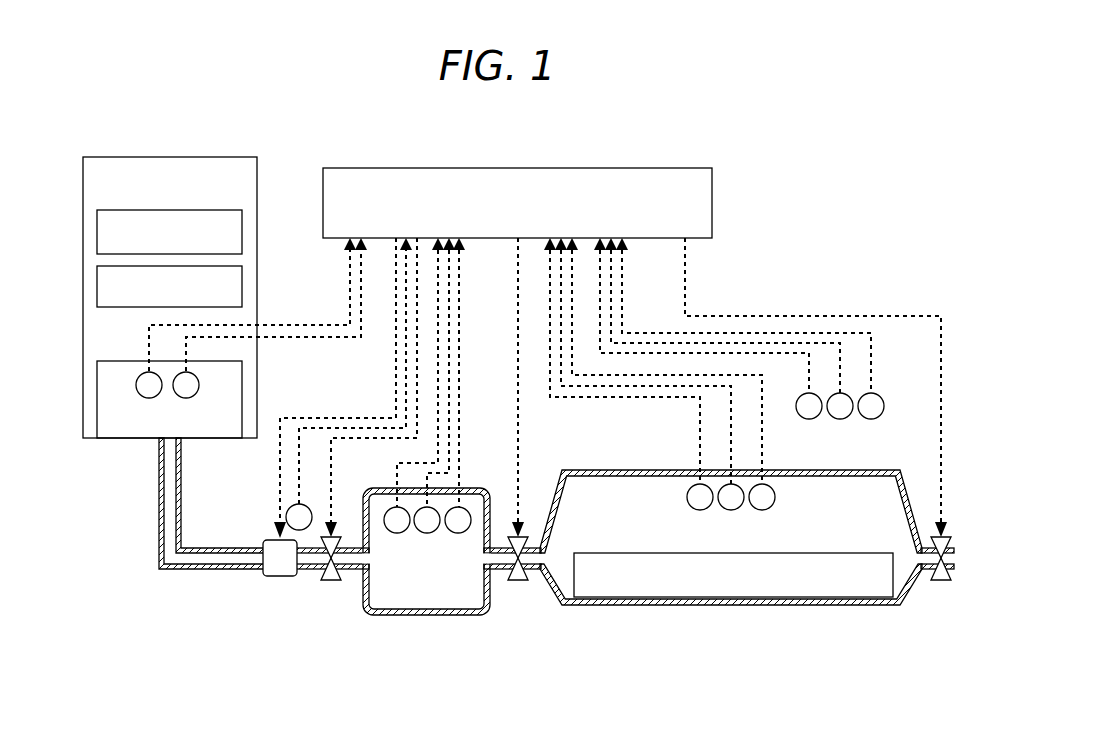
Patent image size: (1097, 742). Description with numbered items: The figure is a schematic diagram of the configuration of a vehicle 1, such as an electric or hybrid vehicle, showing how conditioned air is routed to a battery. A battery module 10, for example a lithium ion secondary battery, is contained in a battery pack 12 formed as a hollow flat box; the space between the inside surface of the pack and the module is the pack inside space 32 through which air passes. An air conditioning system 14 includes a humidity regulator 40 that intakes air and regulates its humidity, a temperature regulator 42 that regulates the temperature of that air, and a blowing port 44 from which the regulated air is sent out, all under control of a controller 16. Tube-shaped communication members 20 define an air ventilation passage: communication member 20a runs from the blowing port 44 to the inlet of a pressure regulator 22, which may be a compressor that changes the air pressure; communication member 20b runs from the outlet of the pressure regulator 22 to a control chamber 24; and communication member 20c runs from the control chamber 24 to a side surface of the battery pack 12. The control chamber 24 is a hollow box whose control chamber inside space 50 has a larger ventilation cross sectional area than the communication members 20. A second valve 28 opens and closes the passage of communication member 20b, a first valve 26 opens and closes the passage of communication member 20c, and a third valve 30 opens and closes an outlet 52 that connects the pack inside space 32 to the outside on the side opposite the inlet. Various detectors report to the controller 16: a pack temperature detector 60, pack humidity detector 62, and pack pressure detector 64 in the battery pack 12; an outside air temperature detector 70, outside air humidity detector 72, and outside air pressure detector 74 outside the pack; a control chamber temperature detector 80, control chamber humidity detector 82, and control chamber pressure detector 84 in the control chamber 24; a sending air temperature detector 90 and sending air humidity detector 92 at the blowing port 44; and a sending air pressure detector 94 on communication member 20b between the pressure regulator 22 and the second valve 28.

The vehicle 1 is at (793, 160).
The battery module 10 is at (836, 553).
The battery pack 12 is at (722, 605).
The air conditioning system 14 is at (171, 157).
The controller 16 is at (542, 168).
The communication members 20 is at (346, 567).
The communication member 20a is at (172, 569).
The communication member 20b is at (316, 569).
The communication member 20c is at (497, 569).
The pressure regulator 22 is at (280, 576).
The control chamber 24 is at (426, 615).
The first valve 26 is at (518, 580).
The second valve 28 is at (332, 580).
The third valve 30 is at (941, 580).
The pack inside space 32 is at (650, 526).
The humidity regulator 40 is at (97, 232).
The temperature regulator 42 is at (97, 287).
The blowing port 44 is at (97, 430).
The control chamber inside space 50 is at (470, 597).
The outlet 52 is at (935, 570).
The pack temperature detector 60 is at (700, 510).
The pack humidity detector 62 is at (732, 510).
The pack pressure detector 64 is at (762, 510).
The outside air temperature detector 70 is at (809, 420).
The outside air humidity detector 72 is at (840, 420).
The outside air pressure detector 74 is at (871, 420).
The control chamber temperature detector 80 is at (388, 506).
The control chamber humidity detector 82 is at (427, 533).
The control chamber pressure detector 84 is at (463, 506).
The sending air temperature detector 90 is at (140, 375).
The sending air humidity detector 92 is at (192, 375).
The sending air pressure detector 94 is at (272, 527).